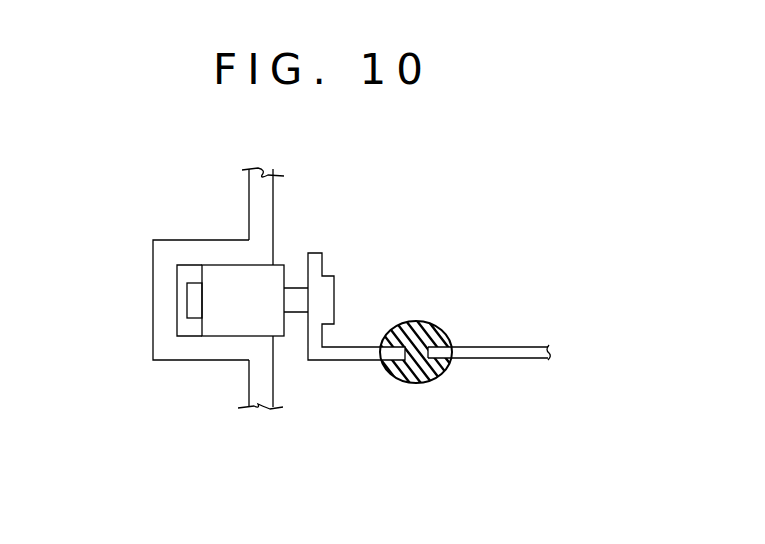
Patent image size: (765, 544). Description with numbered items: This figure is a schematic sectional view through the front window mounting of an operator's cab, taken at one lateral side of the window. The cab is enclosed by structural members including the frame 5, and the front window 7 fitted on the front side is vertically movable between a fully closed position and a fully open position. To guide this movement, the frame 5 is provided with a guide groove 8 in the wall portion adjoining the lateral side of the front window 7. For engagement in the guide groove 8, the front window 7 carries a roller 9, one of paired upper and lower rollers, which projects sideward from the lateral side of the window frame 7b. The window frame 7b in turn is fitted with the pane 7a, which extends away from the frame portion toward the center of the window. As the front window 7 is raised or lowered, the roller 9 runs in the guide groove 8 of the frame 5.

The frame 5 is at (263, 198).
The front window 7 is at (429, 338).
The pane 7a is at (518, 359).
The window frame 7b is at (347, 358).
The guide groove 8 is at (181, 283).
The roller 9 is at (236, 268).